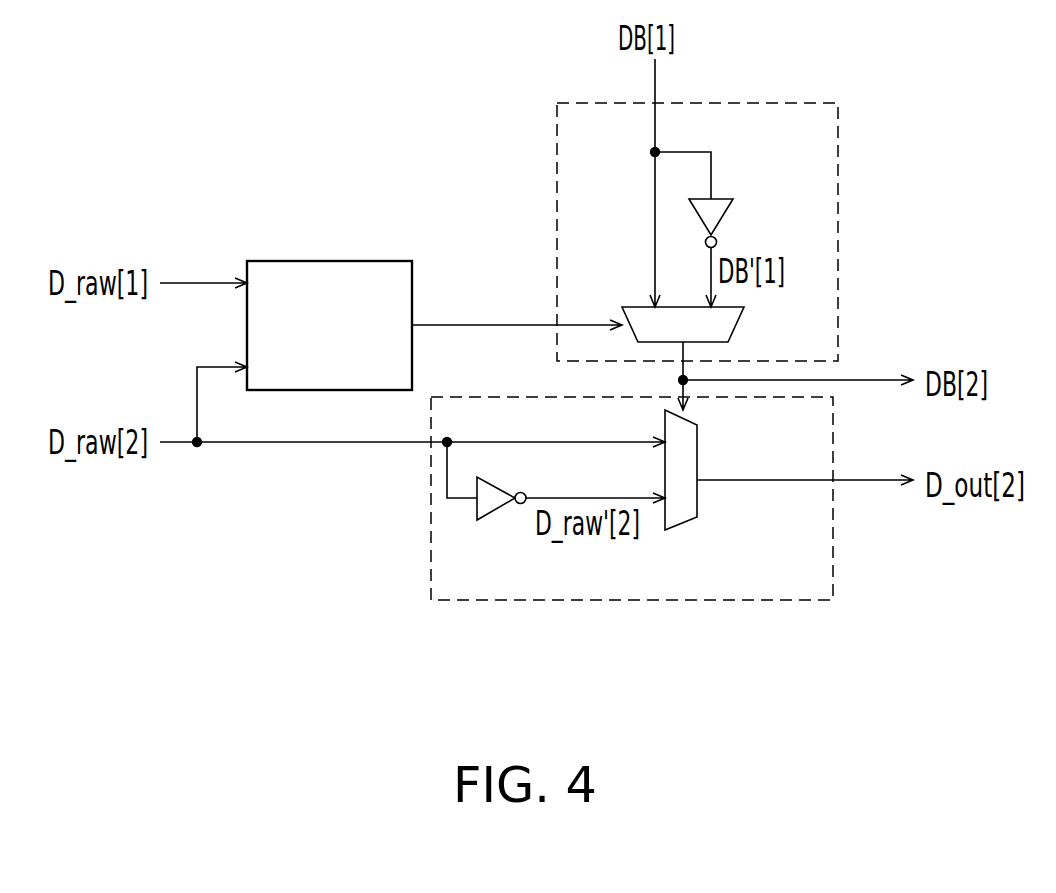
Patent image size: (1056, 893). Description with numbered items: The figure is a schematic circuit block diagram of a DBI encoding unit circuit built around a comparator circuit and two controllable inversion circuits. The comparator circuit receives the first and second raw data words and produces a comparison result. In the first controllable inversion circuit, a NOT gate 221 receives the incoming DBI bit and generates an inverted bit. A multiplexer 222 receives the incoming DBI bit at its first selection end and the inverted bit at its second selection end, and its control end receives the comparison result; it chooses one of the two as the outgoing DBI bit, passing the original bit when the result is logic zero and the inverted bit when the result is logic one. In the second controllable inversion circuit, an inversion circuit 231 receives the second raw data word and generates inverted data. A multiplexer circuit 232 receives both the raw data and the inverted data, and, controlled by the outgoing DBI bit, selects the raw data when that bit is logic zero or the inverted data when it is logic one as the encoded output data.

The NOT gate 221 is at (726, 222).
The multiplexer 222 is at (738, 325).
The inversion circuit 231 is at (497, 514).
The multiplexer circuit 232 is at (700, 456).